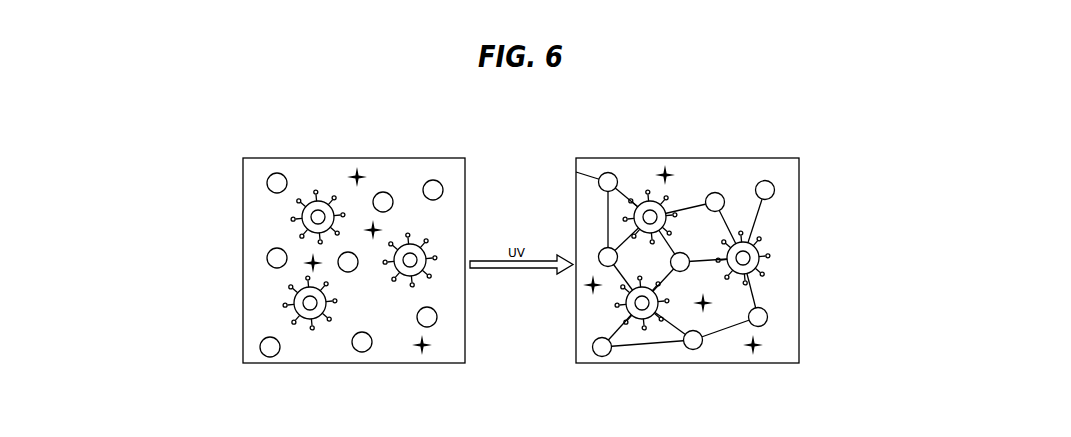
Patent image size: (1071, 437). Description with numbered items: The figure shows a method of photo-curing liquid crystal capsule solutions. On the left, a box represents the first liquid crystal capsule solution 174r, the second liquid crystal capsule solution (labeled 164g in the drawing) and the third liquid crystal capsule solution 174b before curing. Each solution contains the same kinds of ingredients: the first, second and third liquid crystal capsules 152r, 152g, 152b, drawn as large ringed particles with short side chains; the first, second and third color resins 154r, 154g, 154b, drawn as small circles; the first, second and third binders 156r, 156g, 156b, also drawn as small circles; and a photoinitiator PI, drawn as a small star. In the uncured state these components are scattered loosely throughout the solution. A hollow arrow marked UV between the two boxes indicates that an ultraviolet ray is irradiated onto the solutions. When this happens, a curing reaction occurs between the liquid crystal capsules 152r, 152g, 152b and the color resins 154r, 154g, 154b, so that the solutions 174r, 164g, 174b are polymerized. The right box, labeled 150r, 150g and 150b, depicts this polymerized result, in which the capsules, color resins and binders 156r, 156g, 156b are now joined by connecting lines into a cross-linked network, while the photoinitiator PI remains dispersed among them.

The first liquid crystal capsule solution 174r is at (354, 231).
The green color filter layer (before curing) 164g is at (354, 231).
The third liquid crystal capsule solution 174b is at (428, 114).
The red color filter 150r is at (687, 231).
The green color filter 150g is at (687, 231).
The blue color filter 150b is at (757, 114).
The first binder 156r is at (516, 187).
The second binder 156g is at (516, 187).
The third binder 156b is at (253, 187).
The first color resin 154r is at (517, 287).
The second color resin 154g is at (517, 287).
The third color resin 154b is at (263, 259).
The first liquid crystal capsule 152r is at (516, 280).
The second liquid crystal capsule 152g is at (516, 280).
The third liquid crystal capsule 152b is at (293, 304).
The photoinitiator PI is at (425, 354).